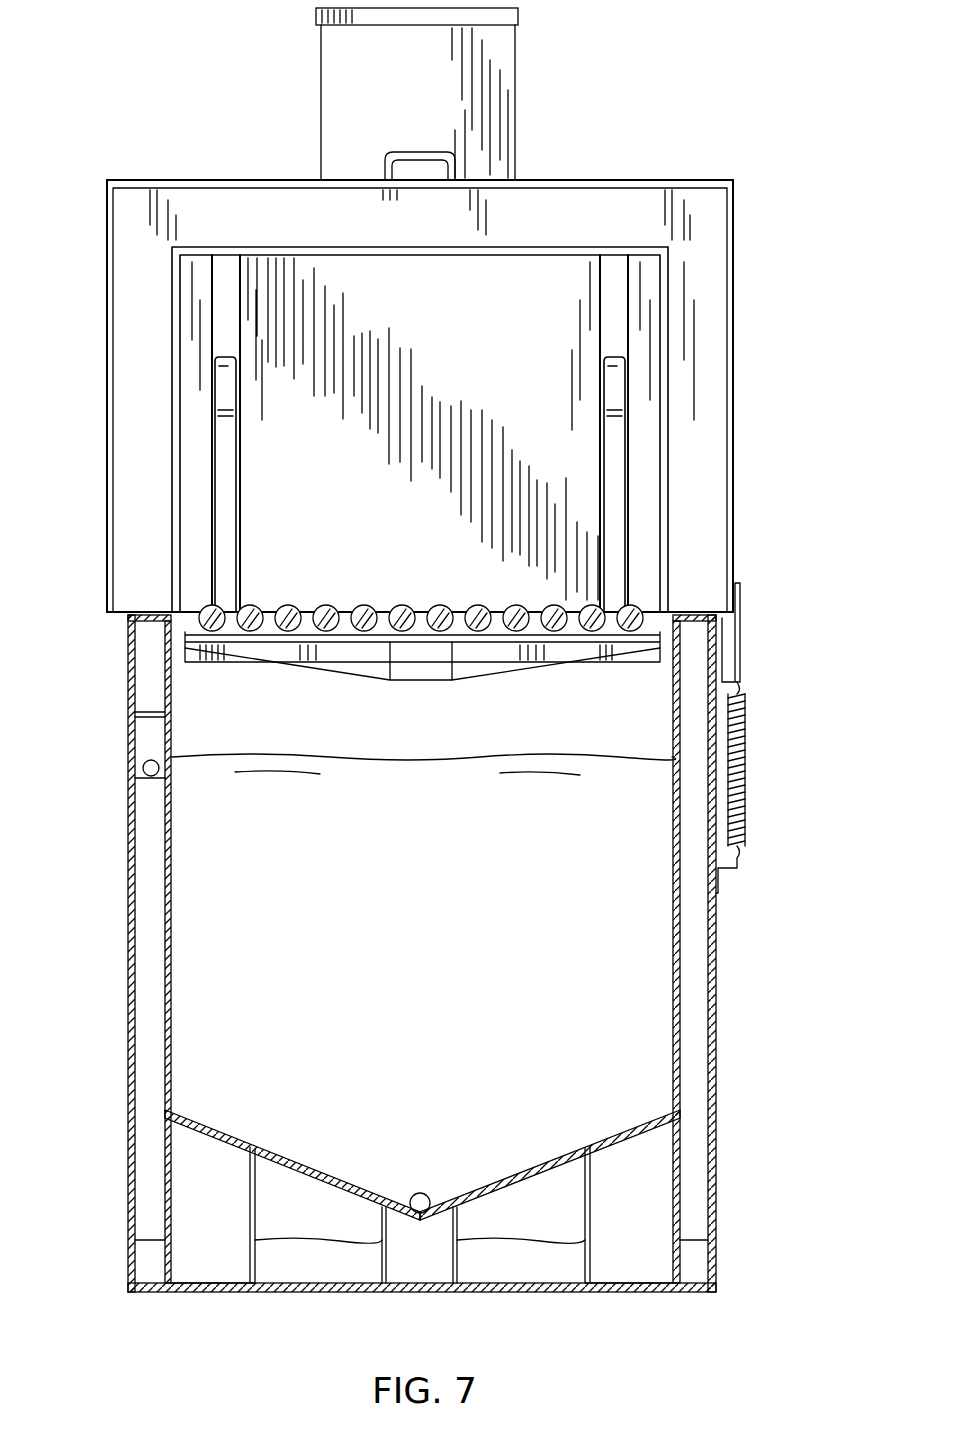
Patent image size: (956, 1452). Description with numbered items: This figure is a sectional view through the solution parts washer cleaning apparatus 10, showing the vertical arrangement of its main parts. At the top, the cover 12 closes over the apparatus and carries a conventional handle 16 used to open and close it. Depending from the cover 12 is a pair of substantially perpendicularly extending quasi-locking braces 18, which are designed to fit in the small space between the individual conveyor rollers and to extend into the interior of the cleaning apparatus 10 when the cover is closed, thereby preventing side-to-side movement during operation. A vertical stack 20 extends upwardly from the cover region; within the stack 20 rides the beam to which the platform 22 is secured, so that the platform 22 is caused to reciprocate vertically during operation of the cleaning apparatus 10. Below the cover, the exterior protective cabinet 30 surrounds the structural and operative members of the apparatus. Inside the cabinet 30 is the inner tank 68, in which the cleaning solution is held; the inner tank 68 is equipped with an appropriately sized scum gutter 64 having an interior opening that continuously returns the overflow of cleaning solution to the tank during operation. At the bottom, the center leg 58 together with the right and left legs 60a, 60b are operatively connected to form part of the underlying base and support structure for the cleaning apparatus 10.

The cleaning apparatus 10 is at (163, 88).
The cover 12 is at (645, 305).
The handle 16 is at (412, 152).
The quasi-locking braces 18 is at (220, 385).
The vertical stack 20 is at (500, 78).
The platform 22 is at (648, 602).
The exterior protective cabinet 30 is at (716, 1098).
The center leg 58 is at (415, 1258).
The right leg 60a is at (208, 1247).
The left leg 60b is at (628, 1258).
The scum gutter 64 is at (165, 738).
The inner tank 68 is at (680, 1013).